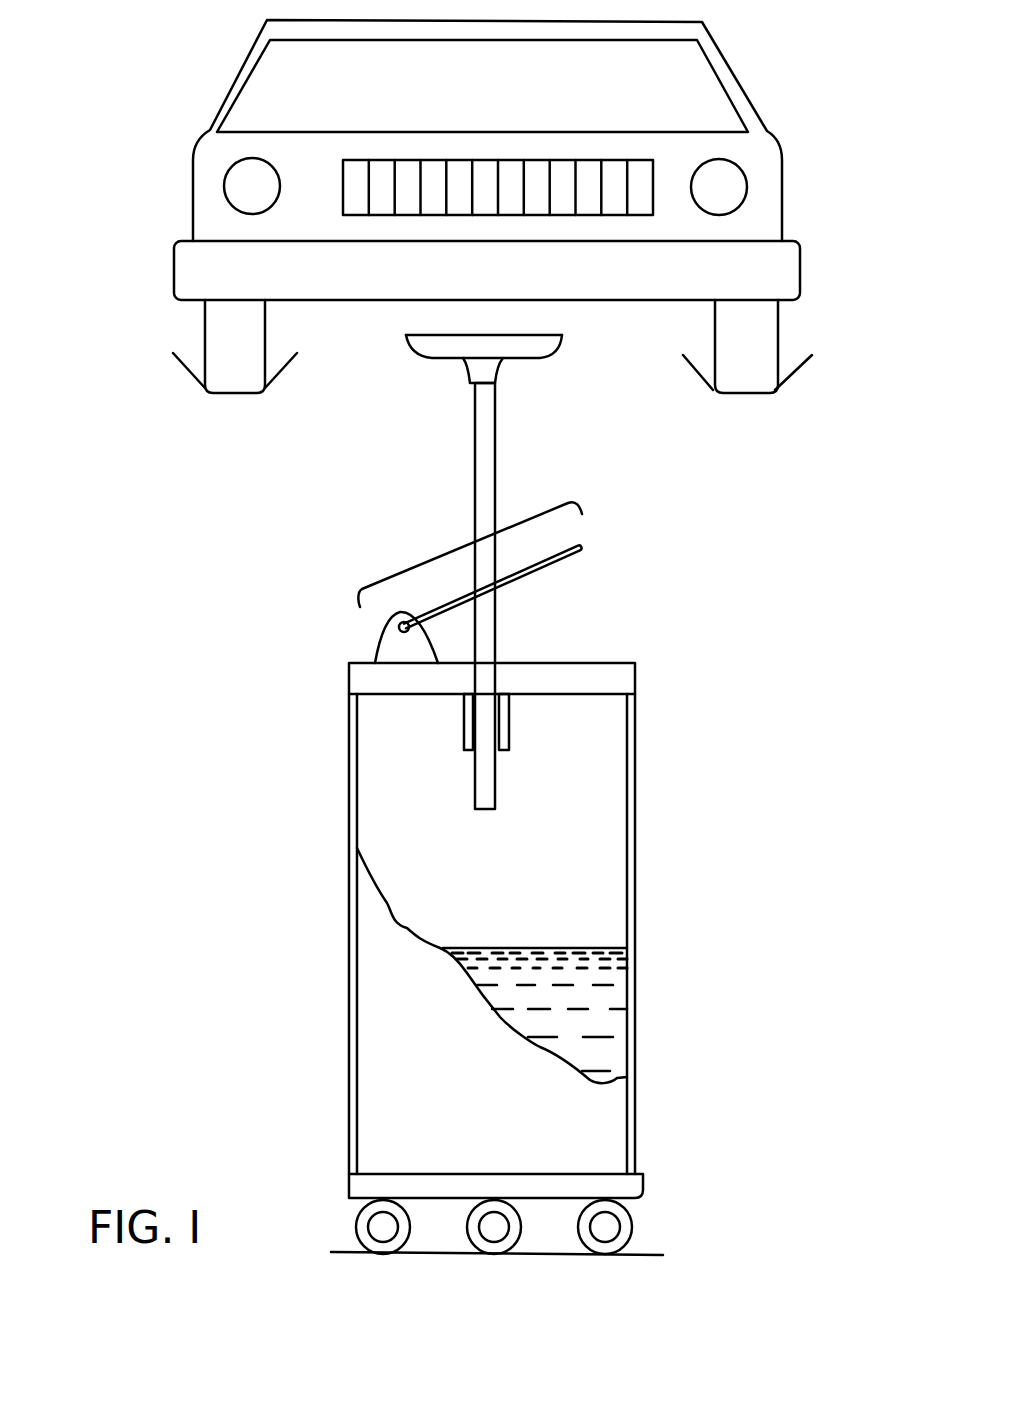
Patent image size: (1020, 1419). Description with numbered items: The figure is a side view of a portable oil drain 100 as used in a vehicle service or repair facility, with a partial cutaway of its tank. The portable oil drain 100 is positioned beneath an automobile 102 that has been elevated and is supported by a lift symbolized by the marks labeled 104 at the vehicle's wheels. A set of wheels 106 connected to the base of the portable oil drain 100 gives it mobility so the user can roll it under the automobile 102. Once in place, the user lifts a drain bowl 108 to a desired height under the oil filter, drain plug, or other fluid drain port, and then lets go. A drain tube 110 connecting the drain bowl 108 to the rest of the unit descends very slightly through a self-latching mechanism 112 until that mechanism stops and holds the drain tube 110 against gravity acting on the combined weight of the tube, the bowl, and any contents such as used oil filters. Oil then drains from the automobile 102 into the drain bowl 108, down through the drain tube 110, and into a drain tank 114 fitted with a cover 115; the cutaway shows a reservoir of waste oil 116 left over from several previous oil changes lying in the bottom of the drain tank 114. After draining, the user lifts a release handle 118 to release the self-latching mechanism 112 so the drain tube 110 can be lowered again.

The portable oil drain 100 is at (380, 324).
The automobile 102 is at (777, 143).
The lift 104 is at (185, 378).
The wheels 106 is at (632, 1218).
The drain bowl 108 is at (560, 340).
The drain tube 110 is at (496, 458).
The self-latching mechanism 112 is at (474, 543).
The drain tank 114 is at (632, 870).
The cover 115 is at (612, 663).
The reservoir of waste oil 116 is at (622, 989).
The release handle 118 is at (552, 565).